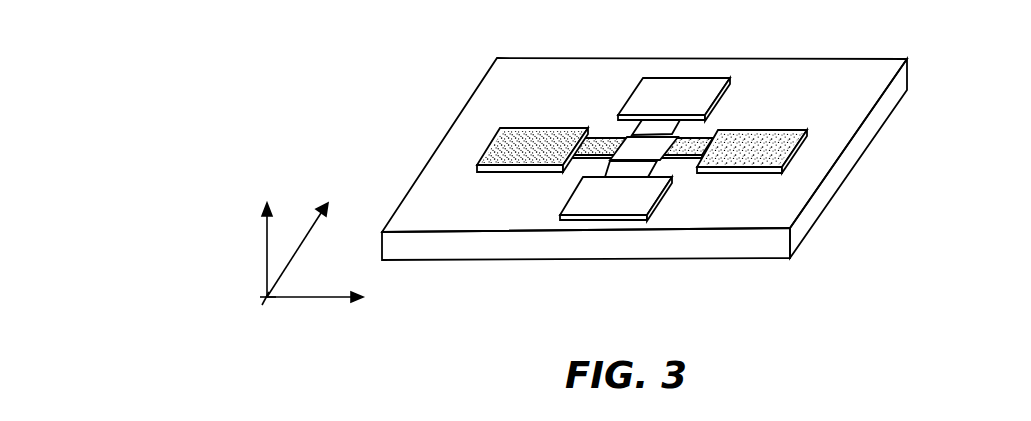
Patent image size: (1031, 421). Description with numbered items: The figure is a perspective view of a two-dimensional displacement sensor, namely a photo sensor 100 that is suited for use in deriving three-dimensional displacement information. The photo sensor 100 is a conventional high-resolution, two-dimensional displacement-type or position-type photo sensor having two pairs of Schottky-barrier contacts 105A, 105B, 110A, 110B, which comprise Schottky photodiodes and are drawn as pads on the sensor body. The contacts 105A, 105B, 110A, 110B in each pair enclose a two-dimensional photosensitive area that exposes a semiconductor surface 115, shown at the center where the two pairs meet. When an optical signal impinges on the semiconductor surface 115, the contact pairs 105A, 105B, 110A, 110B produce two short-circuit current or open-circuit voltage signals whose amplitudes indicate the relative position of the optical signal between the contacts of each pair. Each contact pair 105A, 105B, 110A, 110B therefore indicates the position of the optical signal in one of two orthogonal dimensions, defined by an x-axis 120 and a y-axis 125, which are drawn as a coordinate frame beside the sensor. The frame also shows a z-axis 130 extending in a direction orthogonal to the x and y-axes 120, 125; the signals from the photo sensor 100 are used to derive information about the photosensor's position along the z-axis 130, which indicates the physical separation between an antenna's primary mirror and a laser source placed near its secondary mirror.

The photo sensor 100 is at (921, 50).
The Schottky-barrier contact 105A is at (487, 140).
The Schottky-barrier contact 105B is at (757, 130).
The Schottky-barrier contact 110A is at (692, 78).
The Schottky-barrier contact 110B is at (610, 220).
The semiconductor surface 115 is at (633, 146).
The x-axis 120 is at (312, 298).
The y-axis 125 is at (312, 220).
The z-axis 130 is at (265, 252).